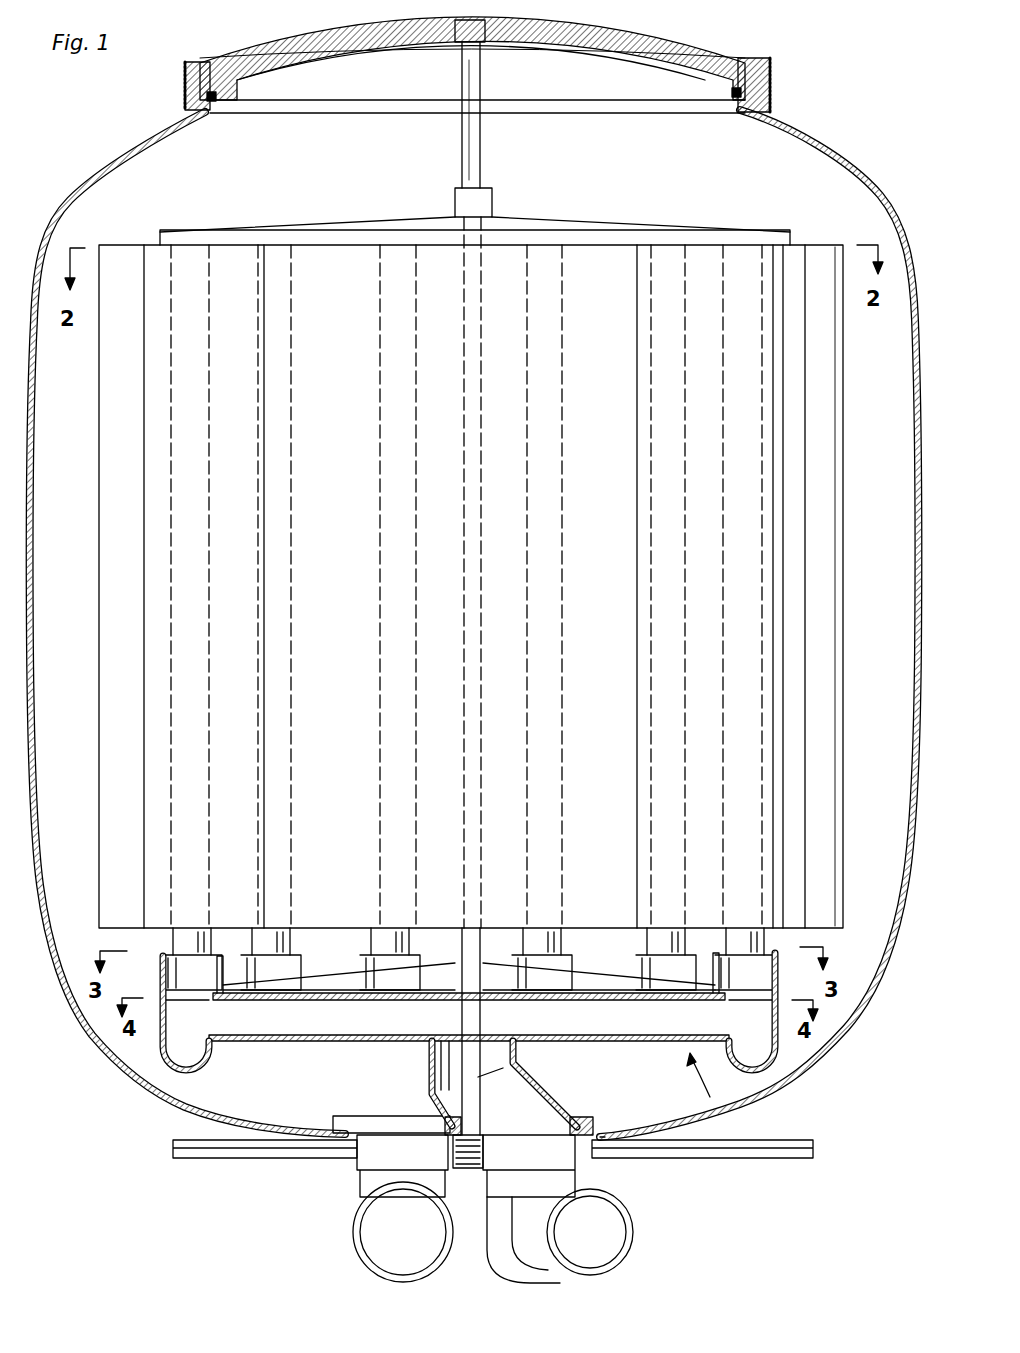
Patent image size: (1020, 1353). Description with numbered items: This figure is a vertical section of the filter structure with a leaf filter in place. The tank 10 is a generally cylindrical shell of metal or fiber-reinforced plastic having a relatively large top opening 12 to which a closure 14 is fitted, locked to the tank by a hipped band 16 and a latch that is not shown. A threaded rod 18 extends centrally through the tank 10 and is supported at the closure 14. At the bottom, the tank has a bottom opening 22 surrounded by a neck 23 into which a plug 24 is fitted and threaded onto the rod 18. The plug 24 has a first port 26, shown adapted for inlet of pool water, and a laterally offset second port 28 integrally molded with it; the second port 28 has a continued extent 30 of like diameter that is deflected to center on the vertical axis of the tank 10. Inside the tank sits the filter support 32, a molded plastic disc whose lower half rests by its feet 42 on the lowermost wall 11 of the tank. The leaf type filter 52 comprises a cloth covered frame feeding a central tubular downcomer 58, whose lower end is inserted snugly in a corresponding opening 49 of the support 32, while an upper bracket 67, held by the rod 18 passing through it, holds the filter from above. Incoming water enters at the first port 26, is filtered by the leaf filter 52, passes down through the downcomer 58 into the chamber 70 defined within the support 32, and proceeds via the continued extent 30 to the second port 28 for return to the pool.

The tank 10 is at (823, 127).
The lowermost wall 11 is at (242, 1103).
The top opening 12 is at (687, 67).
The closure 14 is at (248, 44).
The hipped band 16 is at (768, 77).
The threaded rod 18 is at (487, 163).
The bottom opening 22 is at (575, 1120).
The neck 23 is at (600, 1140).
The plug 24 is at (323, 1227).
The first port 26 is at (418, 1246).
The second port 28 is at (603, 1246).
The continued extent 30 is at (530, 1083).
The filter support 32 is at (720, 1100).
The feet 42 is at (780, 1053).
The openings 49 is at (557, 943).
The leaf type filter 52 is at (817, 240).
The downcomer 58 is at (287, 943).
The upper bracket 67 is at (593, 213).
The chamber 70 is at (352, 1027).